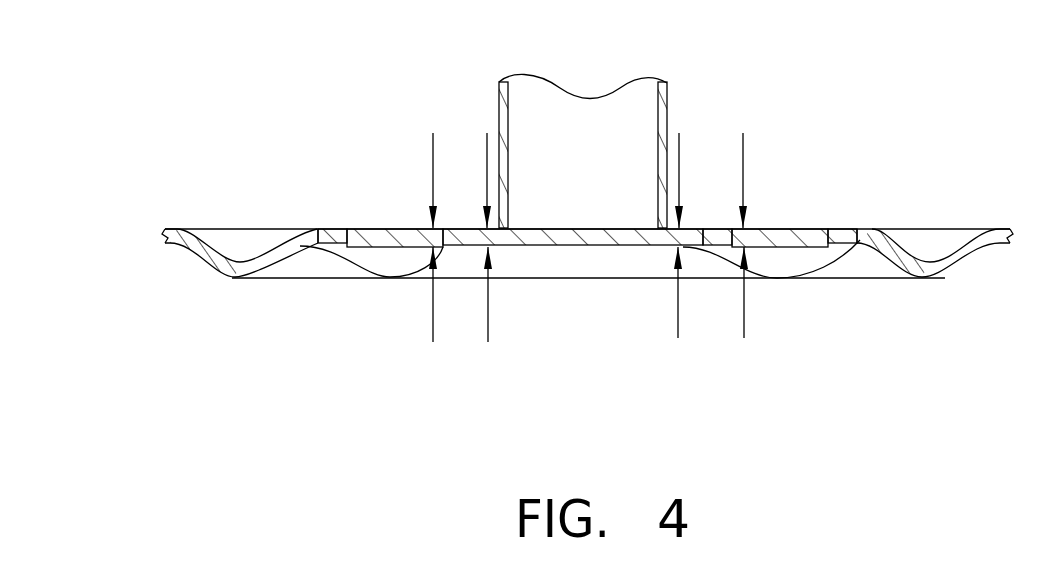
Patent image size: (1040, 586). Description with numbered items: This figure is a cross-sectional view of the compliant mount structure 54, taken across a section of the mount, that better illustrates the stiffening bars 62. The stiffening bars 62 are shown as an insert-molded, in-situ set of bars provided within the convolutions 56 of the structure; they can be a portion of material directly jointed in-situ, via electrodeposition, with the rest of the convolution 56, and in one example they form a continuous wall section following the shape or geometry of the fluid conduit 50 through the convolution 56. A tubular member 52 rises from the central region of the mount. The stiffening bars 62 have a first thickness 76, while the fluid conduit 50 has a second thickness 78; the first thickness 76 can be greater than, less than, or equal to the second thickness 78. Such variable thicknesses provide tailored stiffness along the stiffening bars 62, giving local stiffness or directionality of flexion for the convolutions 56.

The fluid conduit 50 is at (836, 228).
The tubular member 52 is at (667, 102).
The compliant mount structure 54 is at (248, 60).
The convolutions 56 is at (237, 278).
The stiffening bars 62 is at (392, 233).
The first thickness 76 is at (433, 322).
The second thickness 78 is at (488, 322).